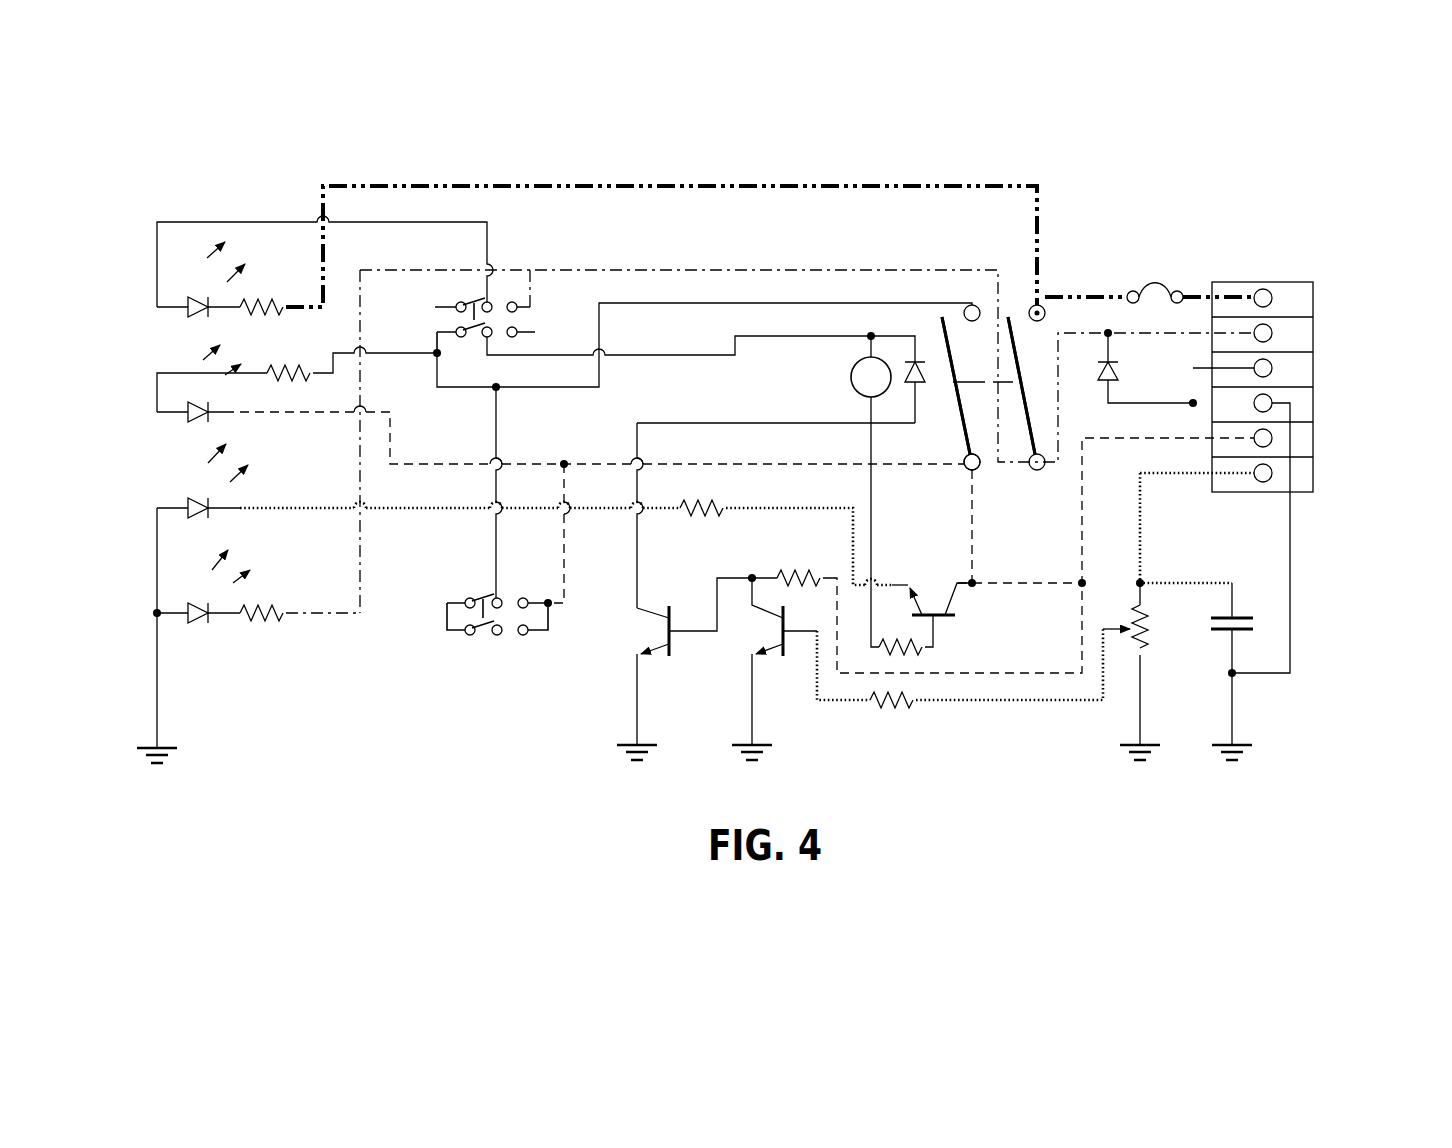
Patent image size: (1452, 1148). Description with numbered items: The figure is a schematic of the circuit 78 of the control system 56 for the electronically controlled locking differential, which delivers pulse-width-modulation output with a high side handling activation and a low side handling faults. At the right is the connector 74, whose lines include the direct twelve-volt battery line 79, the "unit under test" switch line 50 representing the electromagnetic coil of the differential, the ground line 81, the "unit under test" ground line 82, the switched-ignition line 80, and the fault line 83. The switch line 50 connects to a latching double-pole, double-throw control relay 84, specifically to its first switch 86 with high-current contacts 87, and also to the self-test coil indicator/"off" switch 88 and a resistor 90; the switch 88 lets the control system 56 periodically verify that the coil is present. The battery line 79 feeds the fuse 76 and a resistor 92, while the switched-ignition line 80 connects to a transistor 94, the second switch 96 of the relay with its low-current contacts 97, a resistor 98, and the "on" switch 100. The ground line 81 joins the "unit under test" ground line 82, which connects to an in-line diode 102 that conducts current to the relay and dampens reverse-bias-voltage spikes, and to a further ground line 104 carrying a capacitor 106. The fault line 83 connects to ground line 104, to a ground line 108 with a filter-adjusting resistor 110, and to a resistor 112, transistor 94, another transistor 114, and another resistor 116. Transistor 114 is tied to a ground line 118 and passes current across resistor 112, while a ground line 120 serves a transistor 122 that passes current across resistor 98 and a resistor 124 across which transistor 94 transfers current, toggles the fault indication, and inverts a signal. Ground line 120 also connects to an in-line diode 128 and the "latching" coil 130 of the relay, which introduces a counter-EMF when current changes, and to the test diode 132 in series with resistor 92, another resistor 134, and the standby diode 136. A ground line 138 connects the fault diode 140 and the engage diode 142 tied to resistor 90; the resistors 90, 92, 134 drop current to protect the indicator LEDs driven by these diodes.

The control system 56 is at (495, 148).
The circuit 78 is at (765, 173).
The test diode 132 is at (198, 320).
The resistor 92 is at (285, 315).
The resistor 134 is at (265, 366).
The standby diode 136 is at (198, 425).
The fault diode 140 is at (205, 518).
The resistor 90 is at (270, 608).
The engage diode 142 is at (205, 623).
The ground line 138 is at (165, 712).
The self-test coil indicator/"off" switch 88 is at (493, 295).
The "on" switch 100 is at (490, 645).
The resistor 116 is at (712, 503).
The resistor 98 is at (777, 572).
The transistor 122 is at (673, 612).
The transistor 114 is at (790, 650).
The ground line 120 is at (645, 713).
The ground line 118 is at (760, 730).
The "latching" coil 130 is at (858, 365).
The in-line diode 128 is at (920, 365).
The contacts 97 is at (985, 445).
The second switch 96 is at (958, 428).
The control relay 84 is at (990, 470).
The first switch 86 is at (1035, 405).
The contacts 87 is at (1037, 472).
The in-line diode 102 is at (1100, 372).
The transistor 94 is at (957, 590).
The resistor 124 is at (925, 652).
The resistor 112 is at (912, 707).
The resistor 110 is at (1143, 615).
The capacitor 106 is at (1235, 618).
The ground line 108 is at (1148, 708).
The ground line 104 is at (1240, 708).
The fuse 76 is at (1158, 293).
The connector 74 is at (1315, 282).
The battery line 79 is at (1358, 300).
The "unit under test" switch line 50 is at (1392, 316).
The ground line 81 is at (1390, 360).
The "unit under test" ground line 82 is at (1390, 393).
The switched-ignition line 80 is at (1383, 428).
The fault line 83 is at (1368, 463).